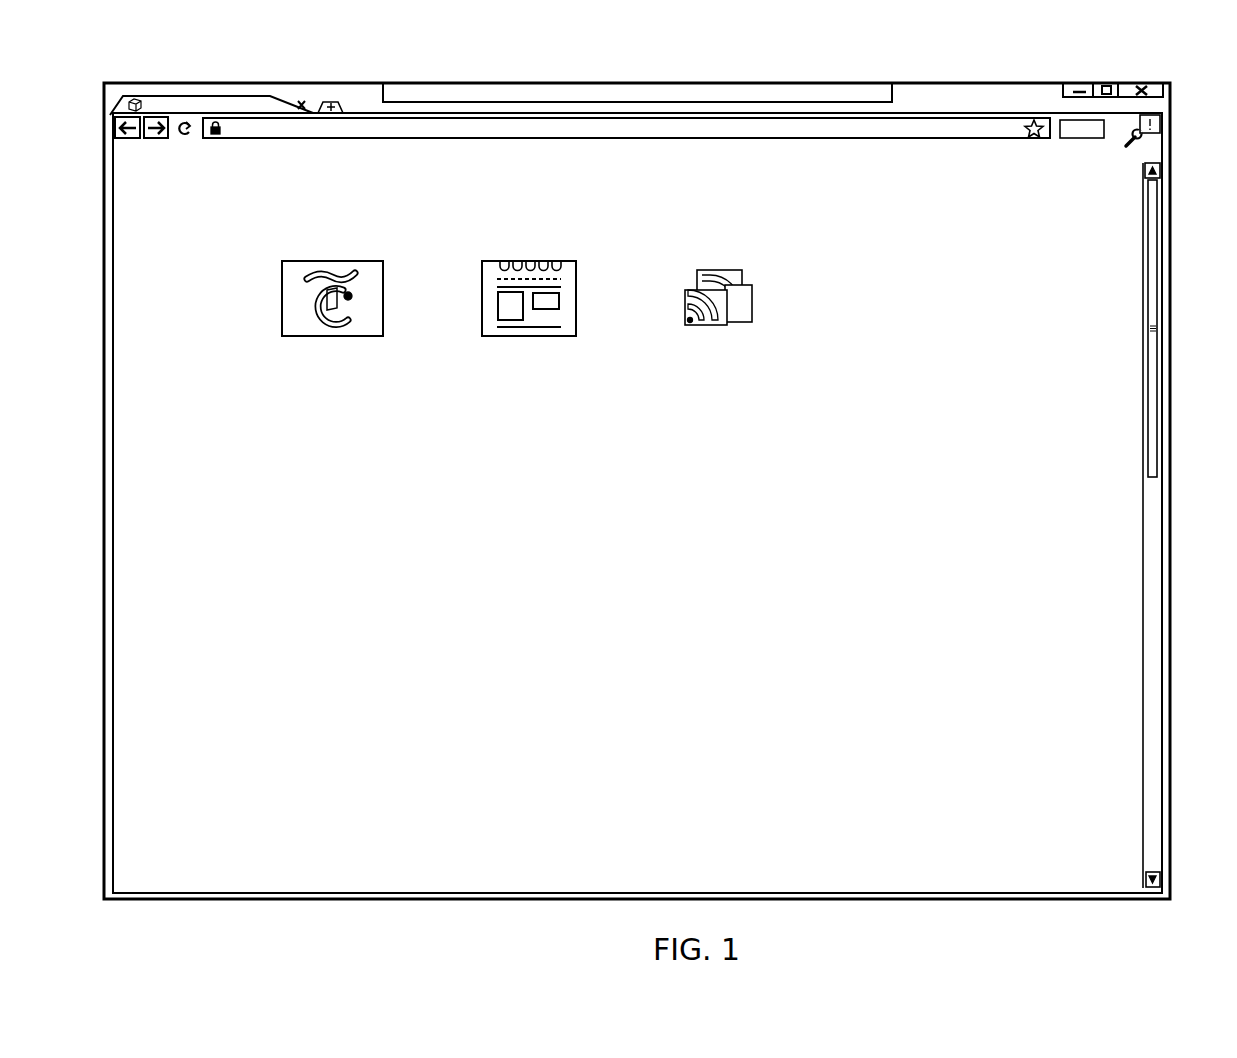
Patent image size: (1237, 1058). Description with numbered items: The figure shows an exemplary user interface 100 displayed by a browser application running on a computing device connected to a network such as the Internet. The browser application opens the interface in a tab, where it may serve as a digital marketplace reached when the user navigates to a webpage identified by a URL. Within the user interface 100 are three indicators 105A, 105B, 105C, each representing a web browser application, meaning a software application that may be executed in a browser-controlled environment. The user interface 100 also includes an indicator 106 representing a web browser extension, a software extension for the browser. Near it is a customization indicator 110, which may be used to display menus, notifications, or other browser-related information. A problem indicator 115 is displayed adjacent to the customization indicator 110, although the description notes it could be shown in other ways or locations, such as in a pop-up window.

The user interface 100 is at (806, 71).
The indicator 105A is at (333, 261).
The indicator 105B is at (530, 261).
The indicator 105C is at (710, 270).
The indicator 106 is at (1082, 140).
The customization indicator 110 is at (1137, 145).
The problem indicator 115 is at (1161, 119).